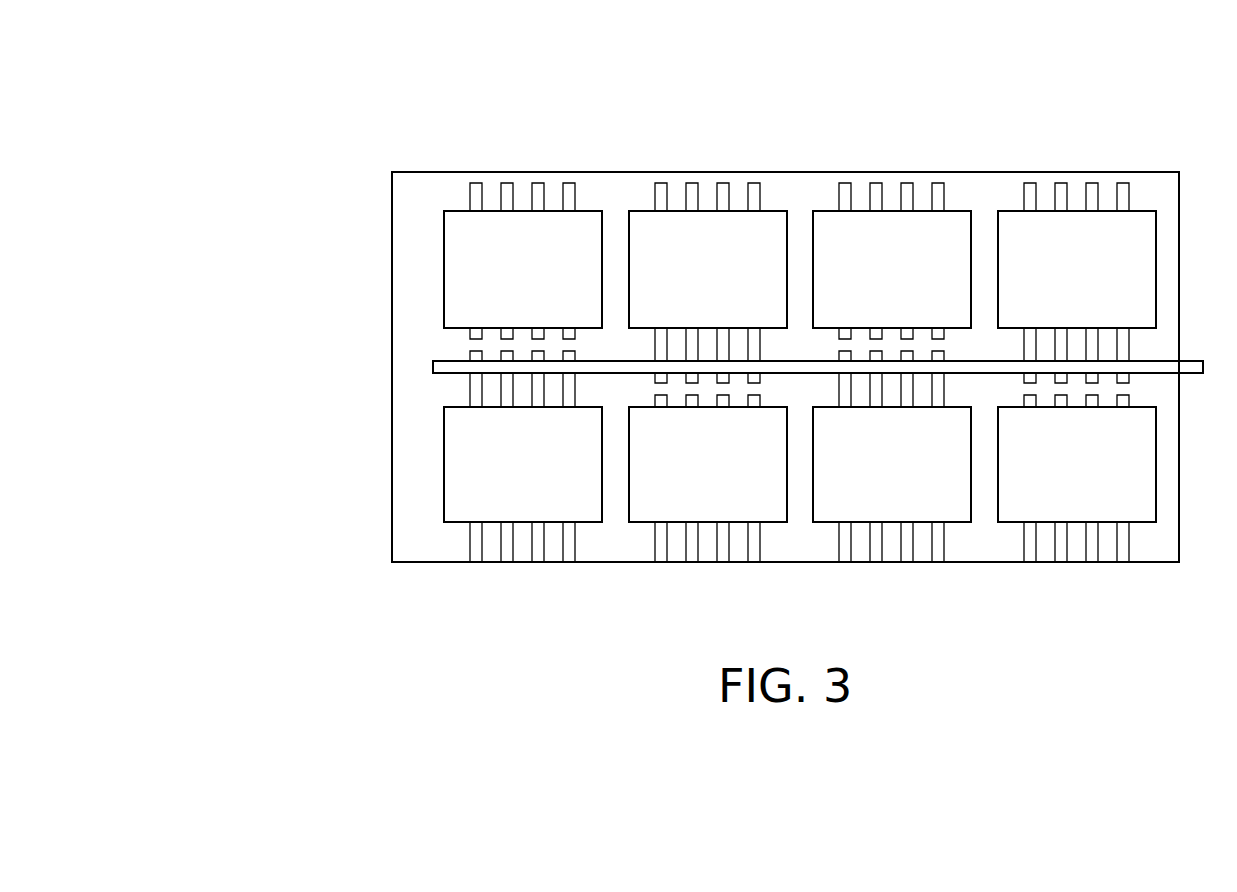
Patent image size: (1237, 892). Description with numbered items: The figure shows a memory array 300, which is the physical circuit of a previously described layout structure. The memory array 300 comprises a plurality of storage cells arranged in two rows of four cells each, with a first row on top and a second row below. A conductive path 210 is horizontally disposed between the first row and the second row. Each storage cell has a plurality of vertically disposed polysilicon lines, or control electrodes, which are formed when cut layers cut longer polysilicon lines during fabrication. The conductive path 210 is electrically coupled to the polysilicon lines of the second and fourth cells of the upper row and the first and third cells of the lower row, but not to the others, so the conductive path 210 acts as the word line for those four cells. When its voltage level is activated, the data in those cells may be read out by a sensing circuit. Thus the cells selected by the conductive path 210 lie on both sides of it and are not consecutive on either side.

The memory array 300 is at (293, 84).
The conductive path 210 is at (433, 367).